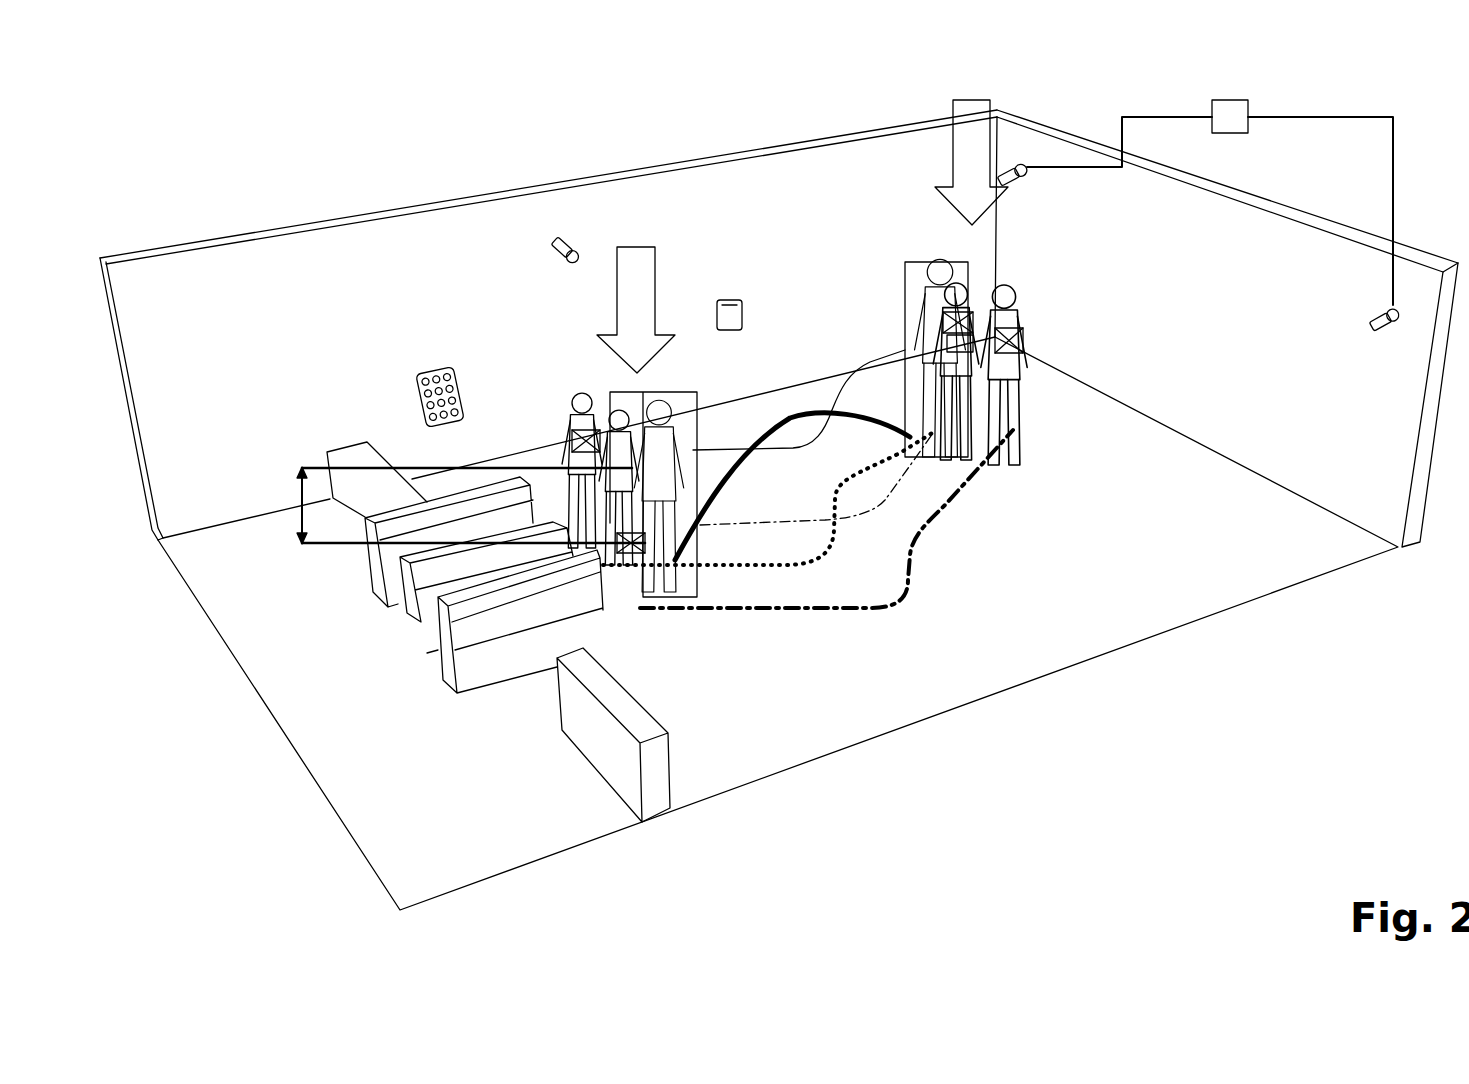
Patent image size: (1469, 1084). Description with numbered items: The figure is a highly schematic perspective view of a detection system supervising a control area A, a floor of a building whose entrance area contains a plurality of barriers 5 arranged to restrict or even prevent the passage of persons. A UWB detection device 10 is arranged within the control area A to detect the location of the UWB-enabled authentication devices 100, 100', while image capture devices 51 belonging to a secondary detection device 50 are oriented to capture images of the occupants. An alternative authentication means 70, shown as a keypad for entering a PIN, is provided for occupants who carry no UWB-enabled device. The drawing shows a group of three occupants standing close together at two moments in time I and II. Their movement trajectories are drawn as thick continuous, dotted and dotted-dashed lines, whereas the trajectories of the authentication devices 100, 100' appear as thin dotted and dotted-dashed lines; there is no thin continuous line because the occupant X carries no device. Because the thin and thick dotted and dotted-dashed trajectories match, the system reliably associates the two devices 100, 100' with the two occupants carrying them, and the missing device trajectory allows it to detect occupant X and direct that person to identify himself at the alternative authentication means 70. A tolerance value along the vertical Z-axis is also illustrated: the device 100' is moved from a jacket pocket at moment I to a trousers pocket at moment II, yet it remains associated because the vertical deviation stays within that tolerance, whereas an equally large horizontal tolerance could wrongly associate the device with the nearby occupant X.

The control area A is at (290, 213).
The barriers 5 is at (637, 667).
The UWB detection device 10 is at (730, 300).
The secondary detection device 50 is at (1228, 110).
The image capture devices 51 is at (560, 238).
The alternative authentication means 70 is at (440, 368).
The UWB-enabled authentication device 100 is at (759, 407).
The UWB-enabled authentication device 100' is at (701, 448).
The occupant X is at (937, 262).
The first moment in time I is at (971, 145).
The second moment in time II is at (636, 294).